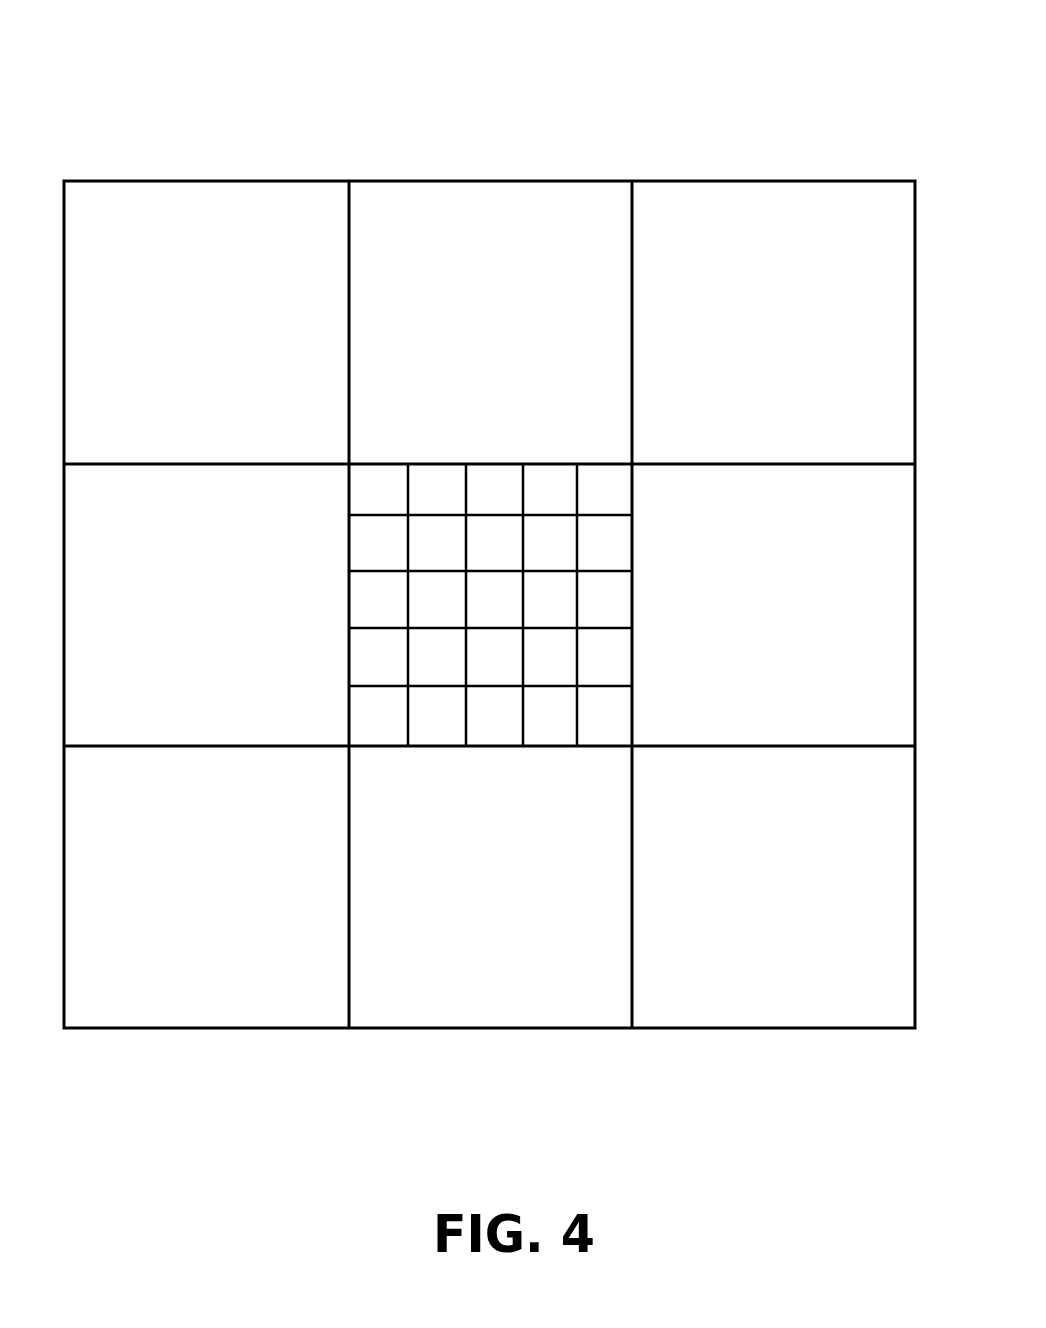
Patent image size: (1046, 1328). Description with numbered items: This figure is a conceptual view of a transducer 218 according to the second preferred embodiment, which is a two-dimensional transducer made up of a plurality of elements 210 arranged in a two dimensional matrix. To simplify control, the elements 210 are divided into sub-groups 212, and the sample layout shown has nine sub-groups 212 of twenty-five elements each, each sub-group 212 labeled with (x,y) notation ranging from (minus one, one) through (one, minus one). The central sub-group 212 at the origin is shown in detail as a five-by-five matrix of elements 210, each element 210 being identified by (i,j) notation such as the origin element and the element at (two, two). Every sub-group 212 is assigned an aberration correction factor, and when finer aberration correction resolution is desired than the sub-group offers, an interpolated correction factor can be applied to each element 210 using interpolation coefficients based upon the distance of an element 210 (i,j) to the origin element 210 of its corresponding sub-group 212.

The transducer 218 is at (615, 140).
The sub-group 212 is at (489, 604).
The element 210 is at (553, 482).